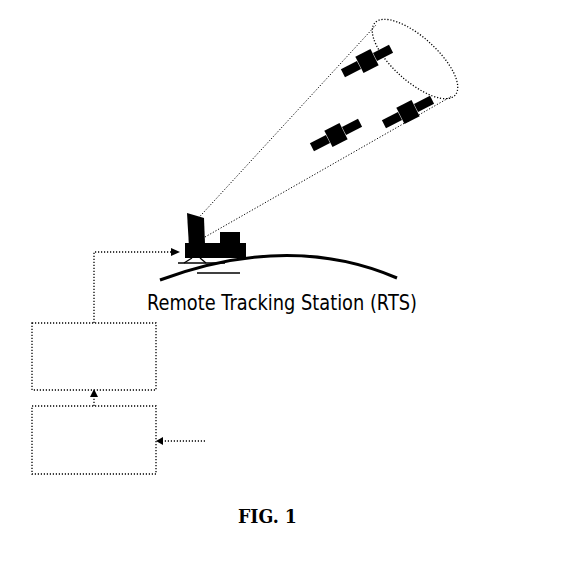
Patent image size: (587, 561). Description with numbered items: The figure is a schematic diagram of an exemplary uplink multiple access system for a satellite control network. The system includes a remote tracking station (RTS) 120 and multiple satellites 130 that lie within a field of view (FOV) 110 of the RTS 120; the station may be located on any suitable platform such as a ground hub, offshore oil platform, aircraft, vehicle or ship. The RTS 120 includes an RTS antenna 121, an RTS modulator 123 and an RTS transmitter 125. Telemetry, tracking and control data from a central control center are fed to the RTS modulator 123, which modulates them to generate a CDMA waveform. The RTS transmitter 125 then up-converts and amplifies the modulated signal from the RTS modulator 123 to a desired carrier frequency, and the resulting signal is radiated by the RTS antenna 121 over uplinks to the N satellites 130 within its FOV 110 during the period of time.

The field of view (FOV) 110 is at (406, 30).
The remote tracking station (RTS) 120 is at (247, 236).
The RTS antenna 121 is at (182, 231).
The RTS modulator 123 is at (157, 416).
The RTS transmitter 125 is at (157, 360).
The satellites 130 is at (388, 107).